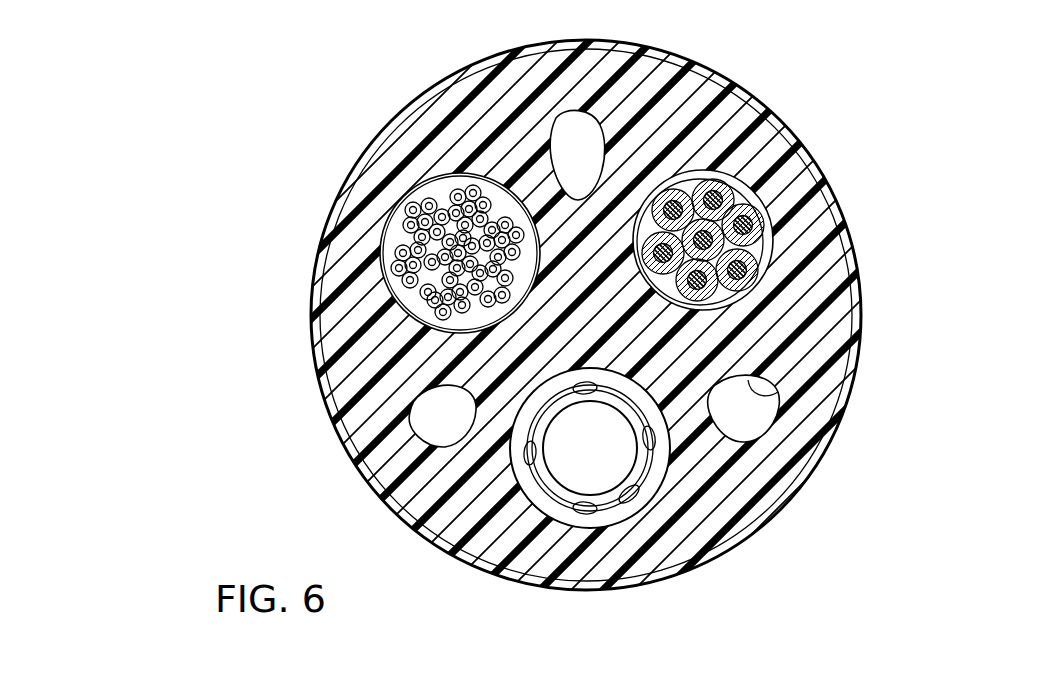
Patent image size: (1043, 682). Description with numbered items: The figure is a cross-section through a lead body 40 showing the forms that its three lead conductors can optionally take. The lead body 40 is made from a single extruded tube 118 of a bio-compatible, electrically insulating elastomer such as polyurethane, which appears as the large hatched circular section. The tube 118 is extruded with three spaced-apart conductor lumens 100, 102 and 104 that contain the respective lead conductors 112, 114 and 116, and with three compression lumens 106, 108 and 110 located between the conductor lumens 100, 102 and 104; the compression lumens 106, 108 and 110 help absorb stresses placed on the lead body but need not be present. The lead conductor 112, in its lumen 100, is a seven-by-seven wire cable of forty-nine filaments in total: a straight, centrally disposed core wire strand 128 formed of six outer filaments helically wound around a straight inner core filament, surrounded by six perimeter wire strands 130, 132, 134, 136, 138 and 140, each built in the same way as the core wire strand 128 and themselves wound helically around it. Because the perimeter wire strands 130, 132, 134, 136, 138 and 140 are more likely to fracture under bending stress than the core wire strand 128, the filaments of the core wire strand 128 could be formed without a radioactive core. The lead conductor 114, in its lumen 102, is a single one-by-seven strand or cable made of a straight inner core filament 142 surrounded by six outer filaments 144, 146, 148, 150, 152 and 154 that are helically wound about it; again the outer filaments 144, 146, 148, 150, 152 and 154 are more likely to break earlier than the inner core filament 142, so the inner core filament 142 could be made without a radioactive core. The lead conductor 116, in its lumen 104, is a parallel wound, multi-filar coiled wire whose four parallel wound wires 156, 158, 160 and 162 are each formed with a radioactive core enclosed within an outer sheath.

The lead body 40 is at (715, 49).
The conductor lumen 100 is at (442, 175).
The conductor lumen 102 is at (780, 200).
The conductor lumen 104 is at (650, 505).
The compression lumen 106 is at (790, 393).
The compression lumen 108 is at (440, 447).
The compression lumen 110 is at (588, 112).
The lead conductor 112 is at (392, 238).
The lead conductor 114 is at (788, 243).
The lead conductor 116 is at (630, 486).
The extruded tube 118 is at (830, 427).
The core wire strand 128 is at (405, 285).
The perimeter wire strand 130 is at (424, 298).
The perimeter wire strand 132 is at (440, 320).
The perimeter wire strand 134 is at (506, 222).
The perimeter wire strand 136 is at (473, 190).
The perimeter wire strand 138 is at (385, 198).
The perimeter wire strand 140 is at (396, 275).
The inner core filament 142 is at (755, 252).
The outer filament 144 is at (775, 228).
The outer filament 146 is at (785, 180).
The outer filament 148 is at (750, 183).
The outer filament 150 is at (727, 170).
The outer filament 152 is at (758, 295).
The outer filament 154 is at (770, 285).
The parallel wound wire 156 is at (585, 514).
The parallel wound wire 158 is at (495, 575).
The parallel wound wire 160 is at (512, 478).
The parallel wound wire 162 is at (636, 492).